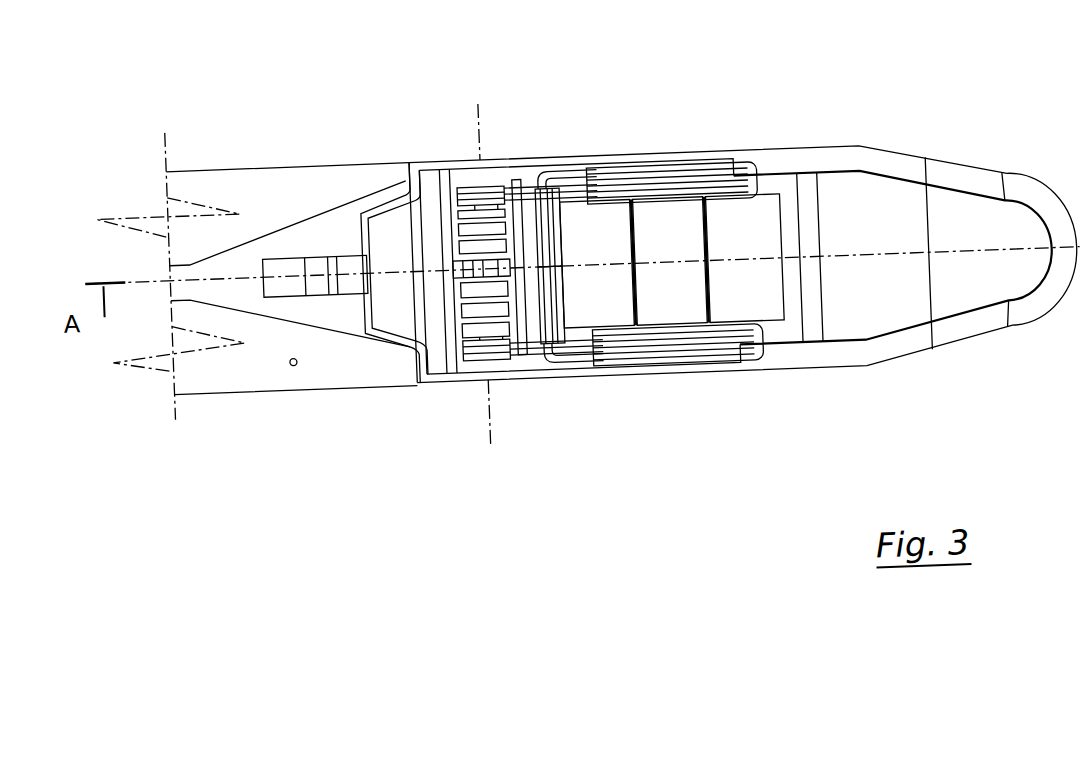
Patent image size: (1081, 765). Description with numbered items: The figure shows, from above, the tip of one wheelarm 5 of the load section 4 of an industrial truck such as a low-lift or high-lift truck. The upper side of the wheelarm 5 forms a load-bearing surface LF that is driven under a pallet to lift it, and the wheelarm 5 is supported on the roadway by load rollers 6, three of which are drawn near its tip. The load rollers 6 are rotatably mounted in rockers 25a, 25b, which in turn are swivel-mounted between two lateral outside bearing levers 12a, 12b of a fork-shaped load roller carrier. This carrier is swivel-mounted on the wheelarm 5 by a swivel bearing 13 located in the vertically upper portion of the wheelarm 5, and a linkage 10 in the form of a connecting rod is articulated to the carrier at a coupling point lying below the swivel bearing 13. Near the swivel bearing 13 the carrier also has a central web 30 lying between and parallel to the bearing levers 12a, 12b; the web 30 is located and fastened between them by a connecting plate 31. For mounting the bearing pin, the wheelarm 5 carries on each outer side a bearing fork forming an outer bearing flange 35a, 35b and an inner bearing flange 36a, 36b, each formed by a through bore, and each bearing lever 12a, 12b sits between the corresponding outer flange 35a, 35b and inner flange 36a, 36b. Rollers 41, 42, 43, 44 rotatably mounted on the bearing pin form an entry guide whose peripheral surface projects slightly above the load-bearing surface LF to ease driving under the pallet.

The load section 4 is at (1000, 128).
The wheelarm 5 is at (194, 165).
The load roller 6 is at (731, 226).
The linkage 10 is at (276, 281).
The bearing lever 12a is at (572, 164).
The bearing lever 12b is at (541, 340).
The swivel bearing 13 is at (483, 96).
The rocker 25a is at (750, 187).
The rocker 25b is at (755, 341).
The central web 30 is at (505, 264).
The connecting plate 31 is at (533, 221).
The outer bearing flange 35a is at (472, 162).
The outer bearing flange 35b is at (481, 369).
The inner bearing flange 36a is at (476, 228).
The inner bearing flange 36b is at (477, 304).
The roller 41 is at (470, 209).
The roller 42 is at (477, 246).
The roller 43 is at (470, 284).
The roller 44 is at (477, 324).
The load-bearing surface LF is at (288, 355).